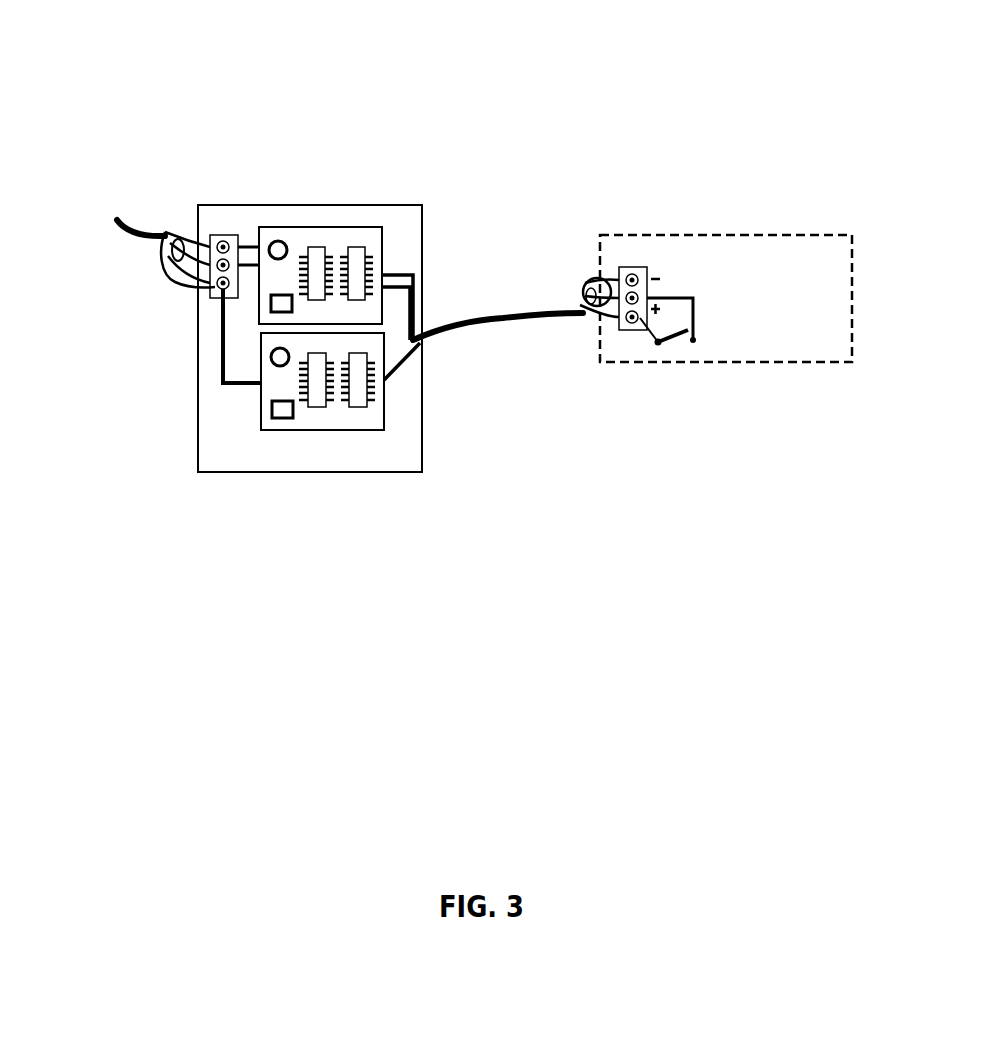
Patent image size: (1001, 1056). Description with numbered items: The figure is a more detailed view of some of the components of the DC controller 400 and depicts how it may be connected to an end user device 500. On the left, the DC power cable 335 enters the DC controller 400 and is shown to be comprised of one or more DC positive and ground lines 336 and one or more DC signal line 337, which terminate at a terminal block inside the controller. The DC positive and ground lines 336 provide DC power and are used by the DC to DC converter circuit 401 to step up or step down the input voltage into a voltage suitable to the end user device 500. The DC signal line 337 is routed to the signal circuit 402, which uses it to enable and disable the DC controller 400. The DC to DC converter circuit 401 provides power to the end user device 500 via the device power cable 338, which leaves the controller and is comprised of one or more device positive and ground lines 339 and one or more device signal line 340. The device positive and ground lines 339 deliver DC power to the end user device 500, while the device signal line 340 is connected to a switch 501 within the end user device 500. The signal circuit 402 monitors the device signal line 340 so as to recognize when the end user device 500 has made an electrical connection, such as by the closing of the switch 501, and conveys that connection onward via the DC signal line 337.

The DC power cable 335 is at (122, 218).
The DC positive and ground lines 336 is at (165, 233).
The DC signal line 337 is at (172, 278).
The device power cable 338 is at (500, 316).
The device positive and ground lines 339 is at (588, 280).
The device signal line 340 is at (583, 323).
The DC controller 400 is at (198, 205).
The DC to DC converter circuit 401 is at (352, 162).
The signal circuit 402 is at (322, 428).
The end user device 500 is at (602, 235).
The switch 501 is at (693, 340).